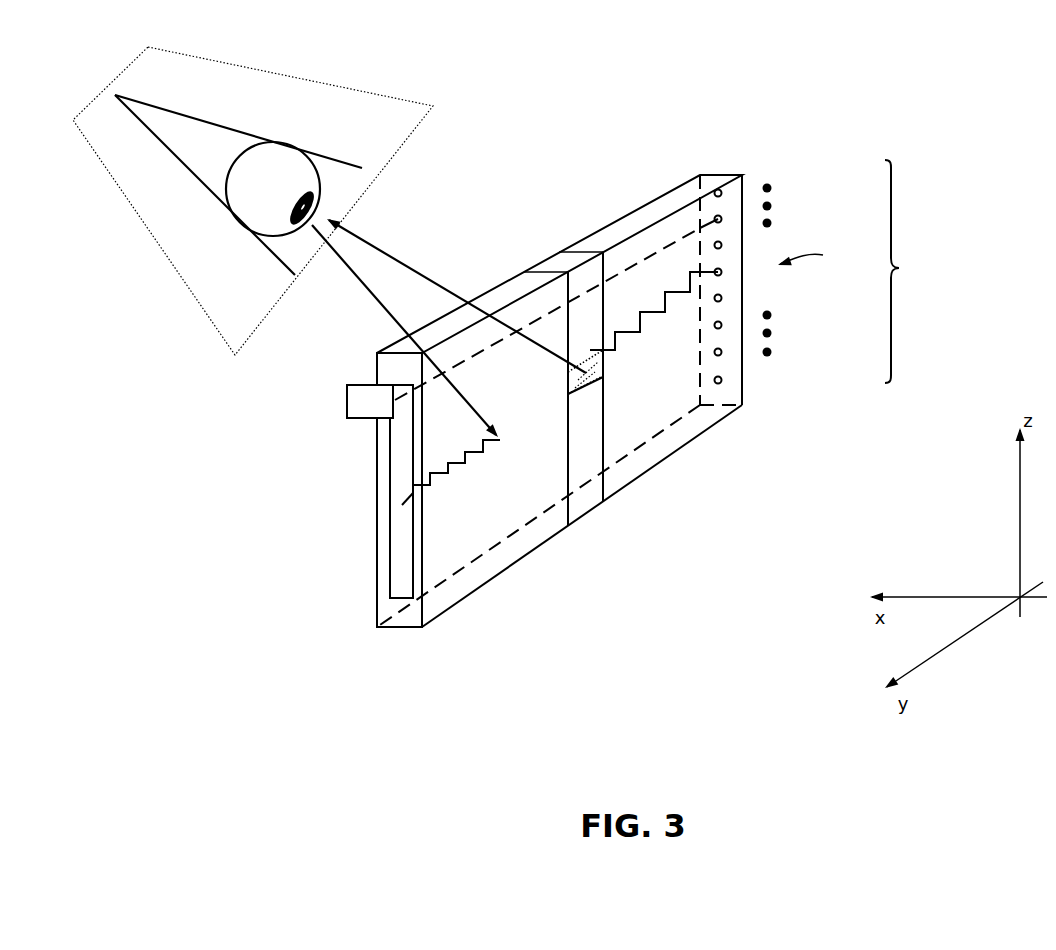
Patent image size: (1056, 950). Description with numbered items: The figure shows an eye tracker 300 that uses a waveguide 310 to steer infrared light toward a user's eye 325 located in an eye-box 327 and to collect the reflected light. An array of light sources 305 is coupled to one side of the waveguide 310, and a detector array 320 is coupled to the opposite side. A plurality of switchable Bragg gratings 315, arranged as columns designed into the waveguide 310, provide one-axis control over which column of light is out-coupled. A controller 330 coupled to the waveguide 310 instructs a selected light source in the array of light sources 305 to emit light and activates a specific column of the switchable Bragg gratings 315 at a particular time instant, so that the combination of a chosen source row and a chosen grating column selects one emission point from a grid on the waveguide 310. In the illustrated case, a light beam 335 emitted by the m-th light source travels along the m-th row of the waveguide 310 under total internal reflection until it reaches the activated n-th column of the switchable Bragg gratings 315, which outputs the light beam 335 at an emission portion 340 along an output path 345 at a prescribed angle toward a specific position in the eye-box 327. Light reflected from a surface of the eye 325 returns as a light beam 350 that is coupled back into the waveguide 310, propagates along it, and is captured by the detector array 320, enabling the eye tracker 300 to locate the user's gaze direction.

The eye tracker 300 is at (519, 121).
The array of light sources 305 is at (846, 272).
The waveguide 310 is at (675, 457).
The switchable Bragg gratings 315 is at (583, 500).
The detector array 320 is at (397, 590).
The eye 325 is at (302, 148).
The eye-box 327 is at (267, 71).
The controller 330 is at (368, 404).
The light beam 335 is at (648, 314).
The emission portion 340 is at (576, 379).
The output path 345 is at (400, 263).
The reflected light beam 350 is at (362, 285).